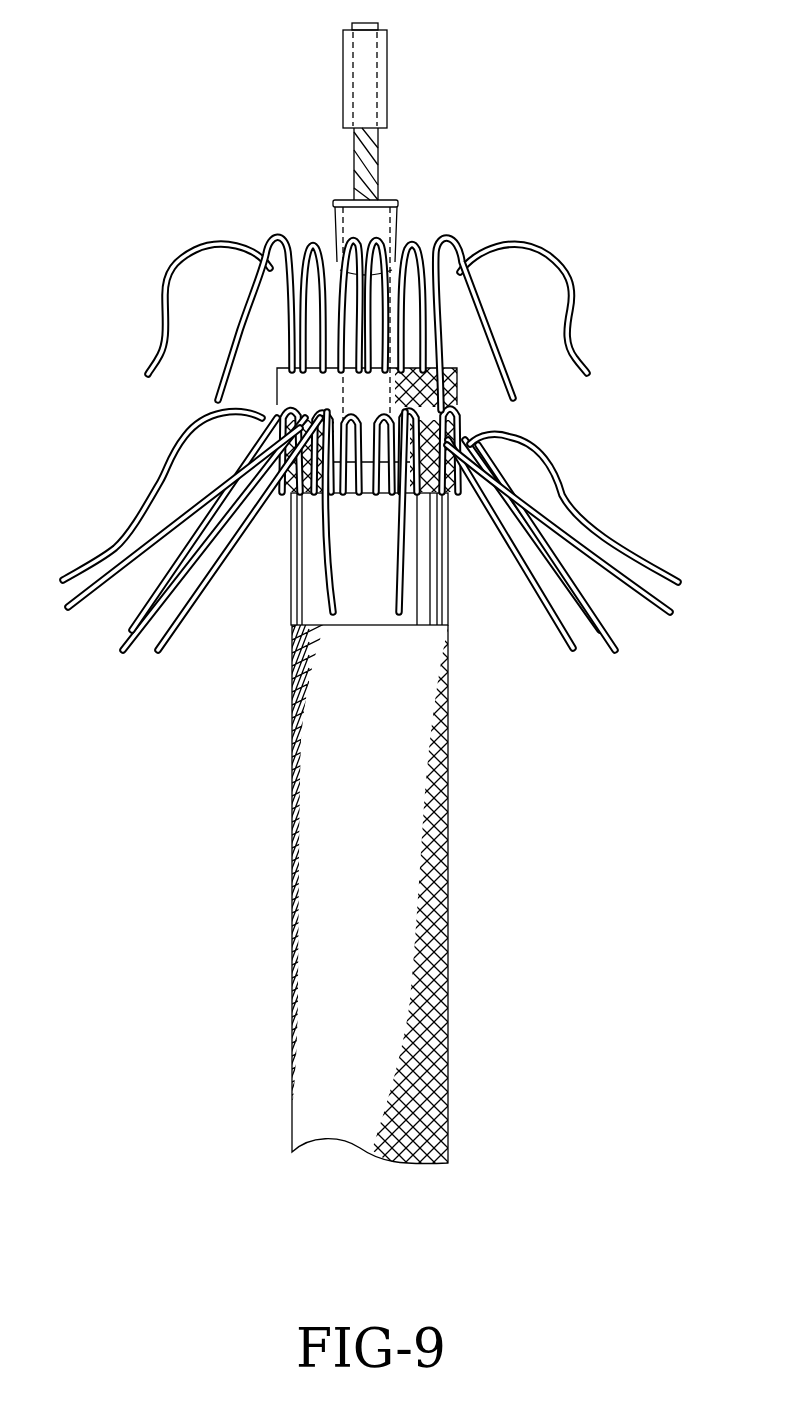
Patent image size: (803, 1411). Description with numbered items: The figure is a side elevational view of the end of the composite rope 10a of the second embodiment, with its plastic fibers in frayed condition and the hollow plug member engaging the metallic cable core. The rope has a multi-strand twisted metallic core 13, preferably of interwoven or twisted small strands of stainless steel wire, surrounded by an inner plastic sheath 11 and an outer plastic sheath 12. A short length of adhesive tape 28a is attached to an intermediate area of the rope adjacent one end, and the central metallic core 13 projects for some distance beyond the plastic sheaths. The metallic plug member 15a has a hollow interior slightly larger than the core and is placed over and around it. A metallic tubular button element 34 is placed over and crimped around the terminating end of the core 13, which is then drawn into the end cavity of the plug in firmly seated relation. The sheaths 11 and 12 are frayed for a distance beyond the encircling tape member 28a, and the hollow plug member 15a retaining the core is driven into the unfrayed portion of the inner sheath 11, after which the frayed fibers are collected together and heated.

The composite rope 10a is at (370, 590).
The inner sheath 11 is at (438, 335).
The outer sheath 12 is at (294, 818).
The metallic core 13 is at (378, 150).
The hollow plug member 15a is at (405, 222).
The adhesive tape 28a is at (423, 597).
The tubular button element 34 is at (386, 48).